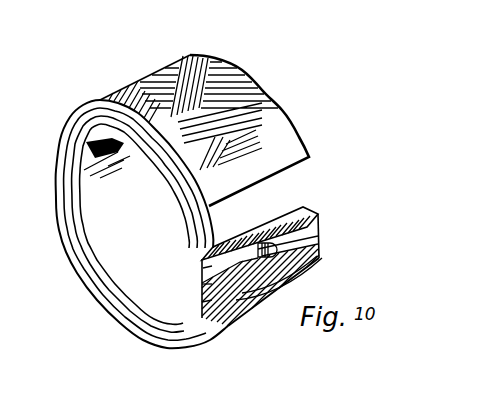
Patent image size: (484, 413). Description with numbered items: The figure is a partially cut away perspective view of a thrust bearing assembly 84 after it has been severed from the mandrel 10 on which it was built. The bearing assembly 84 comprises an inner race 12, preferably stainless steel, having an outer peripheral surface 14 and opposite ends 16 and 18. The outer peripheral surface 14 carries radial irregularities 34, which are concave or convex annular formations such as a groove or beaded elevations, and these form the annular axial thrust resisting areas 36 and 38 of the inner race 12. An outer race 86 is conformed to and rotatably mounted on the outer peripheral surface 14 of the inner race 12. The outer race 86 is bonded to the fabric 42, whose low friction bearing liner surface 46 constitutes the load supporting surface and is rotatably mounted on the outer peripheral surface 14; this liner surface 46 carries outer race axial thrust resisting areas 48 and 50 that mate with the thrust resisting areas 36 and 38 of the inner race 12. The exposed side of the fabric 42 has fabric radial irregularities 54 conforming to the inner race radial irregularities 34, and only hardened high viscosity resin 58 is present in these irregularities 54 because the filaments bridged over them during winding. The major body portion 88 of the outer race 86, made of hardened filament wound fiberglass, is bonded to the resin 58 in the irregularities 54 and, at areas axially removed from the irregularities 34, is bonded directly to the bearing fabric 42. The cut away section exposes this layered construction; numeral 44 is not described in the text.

The mandrel 10 is at (84, 184).
The inner bearing element or race 12 is at (80, 134).
The outer peripheral surface 14 is at (322, 216).
The end 16 is at (132, 306).
The end 18 is at (306, 206).
The radial irregularities 34 is at (272, 238).
The axial thrust resisting area 36 is at (318, 247).
The axial thrust resisting area 38 is at (318, 226).
The fabric 42 is at (198, 338).
The layer 44 is at (205, 302).
The bearing liner surface 46 is at (212, 284).
The outer race axial thrust resisting area 48 is at (203, 268).
The outer race axial thrust resisting area 50 is at (250, 244).
The fabric radial irregularities 54 is at (327, 269).
The hardened high viscosity resin 58 is at (250, 317).
The thrust bearing assembly 84 is at (256, 66).
The outer race 86 is at (98, 98).
The major body portion 88 is at (190, 57).